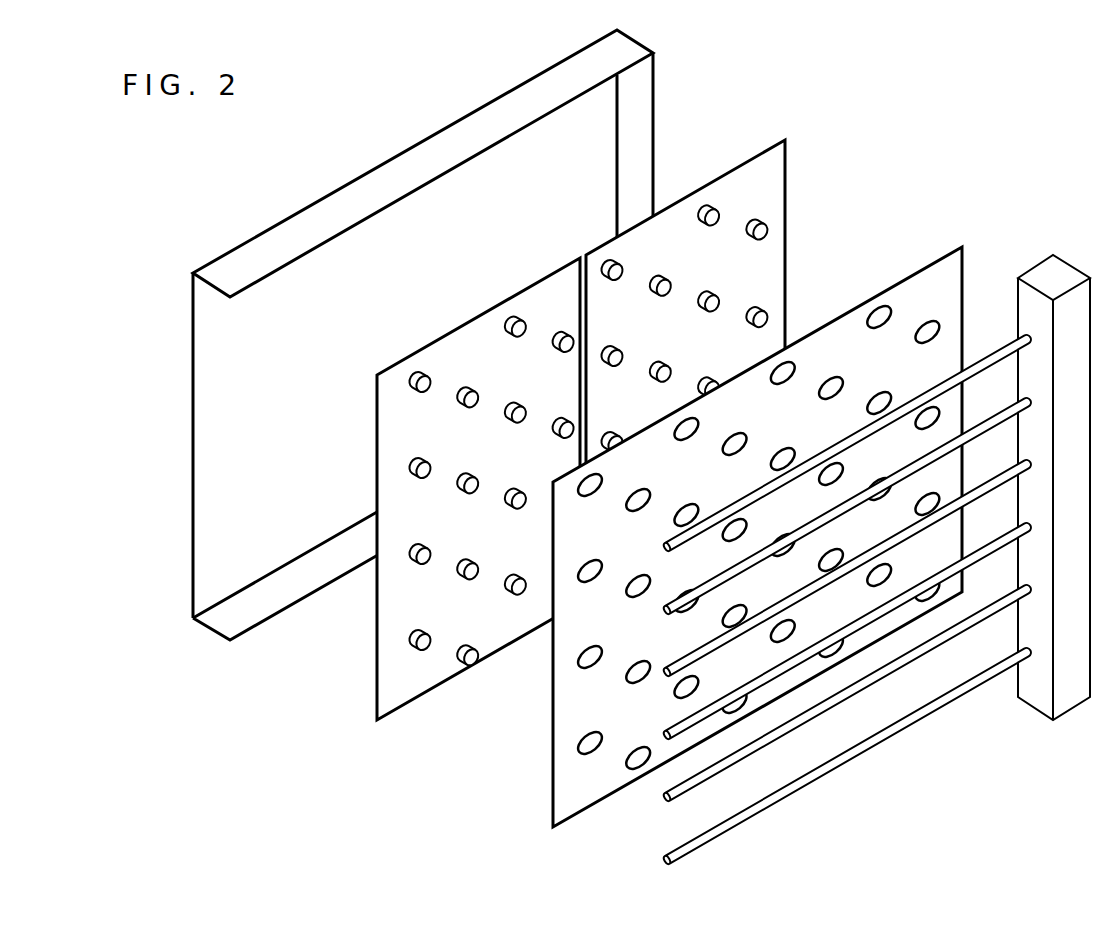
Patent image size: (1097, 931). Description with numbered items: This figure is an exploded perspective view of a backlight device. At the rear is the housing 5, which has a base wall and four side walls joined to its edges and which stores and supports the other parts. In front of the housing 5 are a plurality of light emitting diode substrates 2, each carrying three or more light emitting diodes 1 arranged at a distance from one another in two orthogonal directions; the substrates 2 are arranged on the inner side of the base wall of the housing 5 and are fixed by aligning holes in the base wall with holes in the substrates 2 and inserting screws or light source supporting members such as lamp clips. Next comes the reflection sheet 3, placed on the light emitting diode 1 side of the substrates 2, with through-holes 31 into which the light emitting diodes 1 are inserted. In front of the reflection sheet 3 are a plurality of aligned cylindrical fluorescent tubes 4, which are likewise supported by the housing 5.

The light emitting diode 1 is at (417, 389).
The light emitting diode substrate 2 is at (386, 612).
The reflection sheet 3 is at (552, 745).
The through-hole 31 is at (927, 325).
The cylindrical fluorescent tube 4 is at (872, 681).
The housing 5 is at (191, 391).